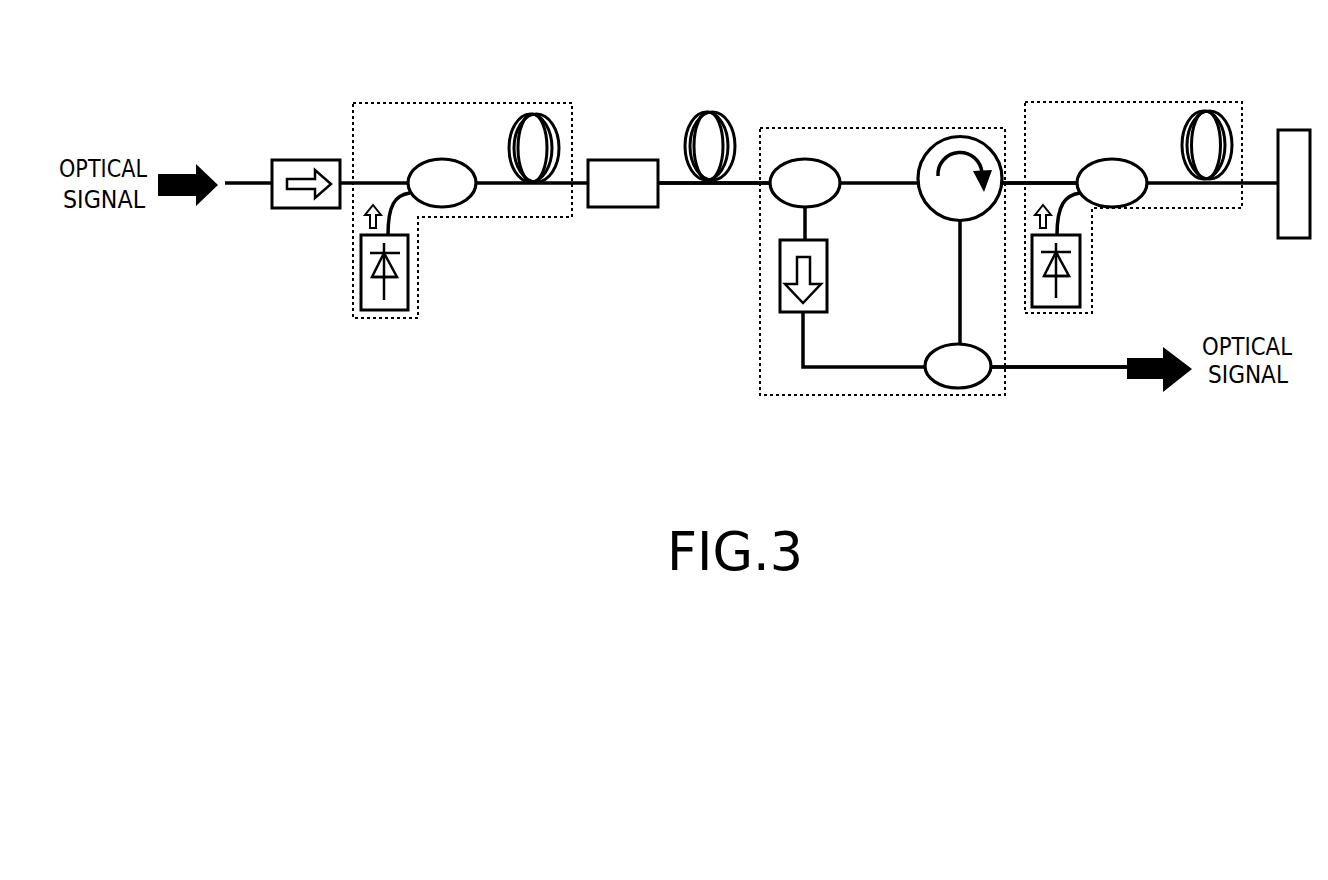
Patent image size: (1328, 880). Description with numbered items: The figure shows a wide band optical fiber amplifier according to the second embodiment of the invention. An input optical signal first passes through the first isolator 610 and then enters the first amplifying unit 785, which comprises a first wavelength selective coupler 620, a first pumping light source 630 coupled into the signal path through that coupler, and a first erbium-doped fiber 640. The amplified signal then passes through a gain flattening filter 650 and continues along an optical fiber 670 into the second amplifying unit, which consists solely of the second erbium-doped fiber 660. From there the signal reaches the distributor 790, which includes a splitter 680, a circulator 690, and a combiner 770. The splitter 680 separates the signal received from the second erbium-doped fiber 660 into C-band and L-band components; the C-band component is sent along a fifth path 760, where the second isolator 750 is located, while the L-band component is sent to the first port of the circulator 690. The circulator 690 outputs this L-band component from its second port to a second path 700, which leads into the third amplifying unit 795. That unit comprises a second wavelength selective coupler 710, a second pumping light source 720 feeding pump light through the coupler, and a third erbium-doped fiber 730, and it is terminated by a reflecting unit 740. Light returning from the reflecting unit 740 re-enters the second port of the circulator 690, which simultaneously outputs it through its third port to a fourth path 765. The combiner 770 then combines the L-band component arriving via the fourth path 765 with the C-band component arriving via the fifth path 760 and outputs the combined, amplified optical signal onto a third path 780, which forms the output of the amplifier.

The first isolator 610 is at (307, 160).
The first wavelength selective coupler 620 is at (432, 159).
The first pumping light source 630 is at (408, 290).
The first erbium-doped fiber 640 is at (550, 113).
The gain flattening filter 650 is at (630, 160).
The second erbium-doped fiber 660 is at (730, 112).
The optical fiber 670 is at (743, 187).
The splitter 680 is at (825, 159).
The circulator 690 is at (965, 137).
The second path 700 is at (1047, 182).
The second wavelength selective coupler 710 is at (1102, 159).
The second pumping light source 720 is at (1080, 267).
The third erbium-doped fiber 730 is at (1213, 112).
The reflecting unit 740 is at (1287, 130).
The second isolator 750 is at (780, 298).
The fifth path 760 is at (802, 349).
The fourth path 765 is at (958, 250).
The combiner 770 is at (940, 344).
The third path 780 is at (1072, 366).
The first amplifying unit 785 is at (550, 217).
The distributor 790 is at (892, 128).
The third amplifying unit 795 is at (1227, 209).